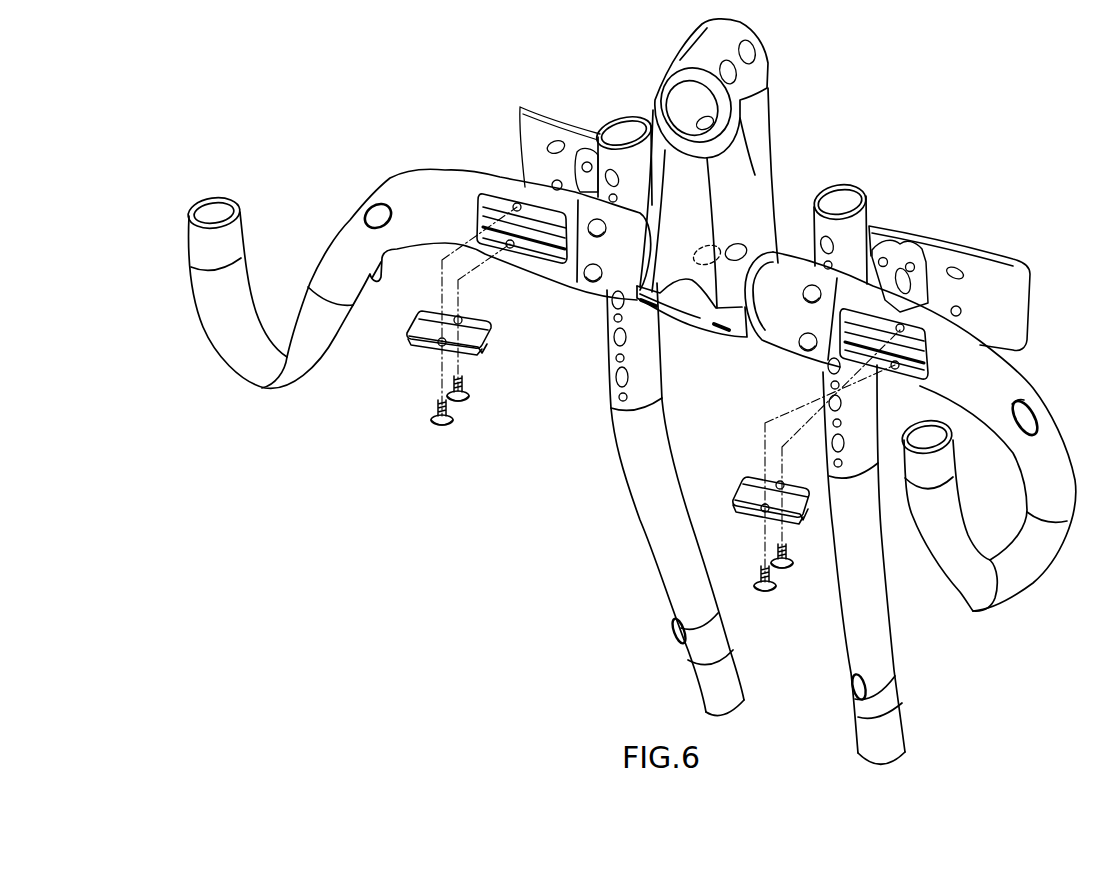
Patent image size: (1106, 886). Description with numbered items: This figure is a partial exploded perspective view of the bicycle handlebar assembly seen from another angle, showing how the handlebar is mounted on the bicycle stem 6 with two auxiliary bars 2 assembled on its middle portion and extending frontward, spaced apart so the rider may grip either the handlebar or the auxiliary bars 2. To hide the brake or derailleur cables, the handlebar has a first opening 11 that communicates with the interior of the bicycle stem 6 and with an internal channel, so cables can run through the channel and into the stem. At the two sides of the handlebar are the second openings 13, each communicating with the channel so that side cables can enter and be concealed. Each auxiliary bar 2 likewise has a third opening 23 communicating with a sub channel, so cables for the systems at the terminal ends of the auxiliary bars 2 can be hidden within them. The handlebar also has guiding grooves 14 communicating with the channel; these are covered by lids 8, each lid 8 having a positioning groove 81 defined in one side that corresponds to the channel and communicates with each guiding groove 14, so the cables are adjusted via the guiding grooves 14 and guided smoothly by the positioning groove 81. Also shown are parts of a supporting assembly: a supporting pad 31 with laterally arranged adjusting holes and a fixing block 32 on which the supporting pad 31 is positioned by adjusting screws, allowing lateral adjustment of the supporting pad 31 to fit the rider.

The auxiliary bar 2 is at (656, 499).
The bicycle stem 6 is at (733, 178).
The lid 8 is at (417, 316).
The first opening 11 is at (707, 246).
The second opening 13 is at (377, 208).
The guiding groove 14 is at (845, 350).
The third opening 23 is at (675, 633).
The supporting pad 31 is at (983, 270).
The fixing block 32 is at (907, 253).
The positioning groove 81 is at (428, 328).